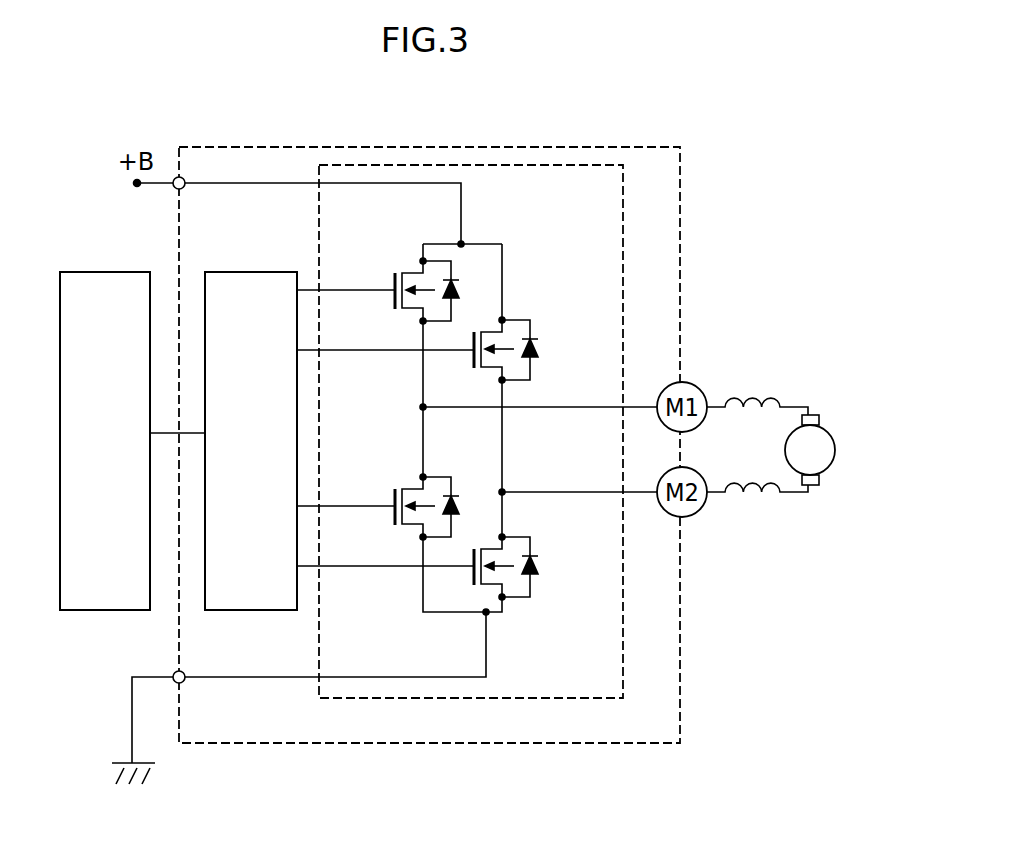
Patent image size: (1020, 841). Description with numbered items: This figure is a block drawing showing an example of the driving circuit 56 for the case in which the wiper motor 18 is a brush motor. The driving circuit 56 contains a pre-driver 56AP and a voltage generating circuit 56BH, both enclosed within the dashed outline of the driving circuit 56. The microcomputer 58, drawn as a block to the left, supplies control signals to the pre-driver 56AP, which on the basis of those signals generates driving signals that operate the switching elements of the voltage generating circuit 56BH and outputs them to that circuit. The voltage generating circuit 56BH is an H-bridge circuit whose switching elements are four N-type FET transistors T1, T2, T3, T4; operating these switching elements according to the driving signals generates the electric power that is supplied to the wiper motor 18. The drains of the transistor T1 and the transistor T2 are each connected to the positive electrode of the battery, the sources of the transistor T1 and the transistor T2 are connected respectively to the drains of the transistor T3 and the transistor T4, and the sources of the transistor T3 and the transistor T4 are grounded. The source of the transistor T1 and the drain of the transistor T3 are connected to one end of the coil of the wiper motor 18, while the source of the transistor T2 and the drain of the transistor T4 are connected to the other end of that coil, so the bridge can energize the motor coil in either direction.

The driving circuit 56 is at (243, 147).
The voltage generating circuit 56BH is at (520, 165).
The pre-driver 56AP is at (250, 272).
The microcomputer 58 is at (100, 272).
The wiper motor 18 is at (828, 465).
The transistor T1 is at (420, 259).
The transistor T2 is at (532, 330).
The transistor T3 is at (419, 475).
The transistor T4 is at (532, 592).